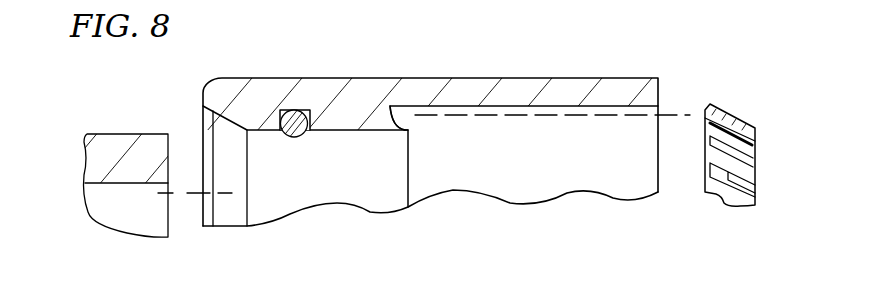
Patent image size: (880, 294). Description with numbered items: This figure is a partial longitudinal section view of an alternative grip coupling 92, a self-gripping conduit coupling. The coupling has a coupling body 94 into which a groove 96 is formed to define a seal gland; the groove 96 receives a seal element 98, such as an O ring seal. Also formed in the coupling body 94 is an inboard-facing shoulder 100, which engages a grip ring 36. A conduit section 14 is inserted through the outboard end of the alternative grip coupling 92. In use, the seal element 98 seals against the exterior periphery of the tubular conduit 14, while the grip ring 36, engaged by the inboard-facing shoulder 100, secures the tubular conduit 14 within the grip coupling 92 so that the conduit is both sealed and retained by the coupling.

The conduit section 14 is at (110, 140).
The grip ring 36 is at (750, 116).
The alternative grip coupling 92 is at (605, 60).
The coupling body 94 is at (330, 90).
The groove 96 is at (299, 135).
The seal element 98 is at (293, 110).
The inboard-facing shoulder 100 is at (388, 105).